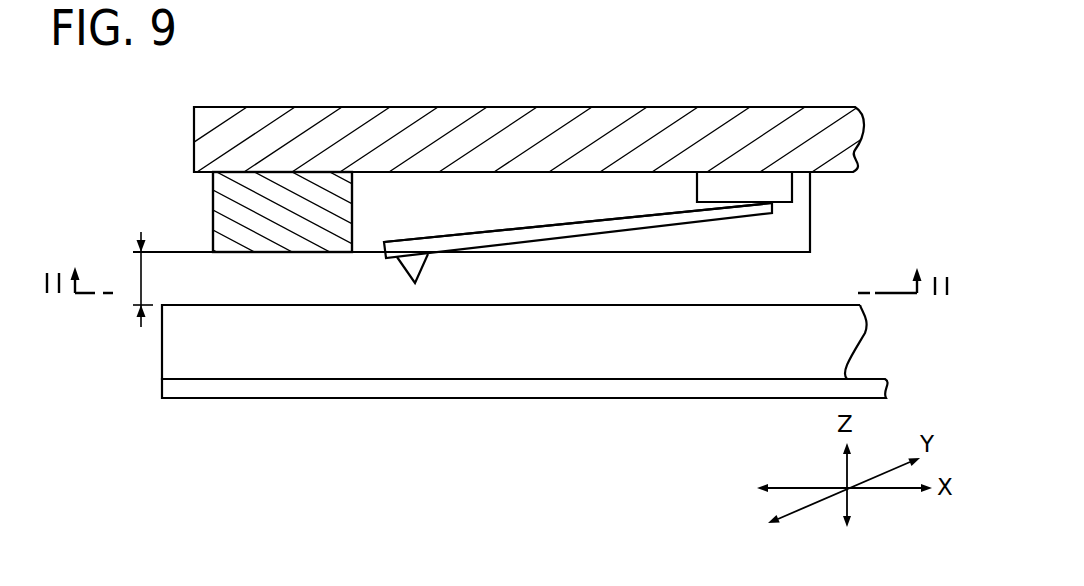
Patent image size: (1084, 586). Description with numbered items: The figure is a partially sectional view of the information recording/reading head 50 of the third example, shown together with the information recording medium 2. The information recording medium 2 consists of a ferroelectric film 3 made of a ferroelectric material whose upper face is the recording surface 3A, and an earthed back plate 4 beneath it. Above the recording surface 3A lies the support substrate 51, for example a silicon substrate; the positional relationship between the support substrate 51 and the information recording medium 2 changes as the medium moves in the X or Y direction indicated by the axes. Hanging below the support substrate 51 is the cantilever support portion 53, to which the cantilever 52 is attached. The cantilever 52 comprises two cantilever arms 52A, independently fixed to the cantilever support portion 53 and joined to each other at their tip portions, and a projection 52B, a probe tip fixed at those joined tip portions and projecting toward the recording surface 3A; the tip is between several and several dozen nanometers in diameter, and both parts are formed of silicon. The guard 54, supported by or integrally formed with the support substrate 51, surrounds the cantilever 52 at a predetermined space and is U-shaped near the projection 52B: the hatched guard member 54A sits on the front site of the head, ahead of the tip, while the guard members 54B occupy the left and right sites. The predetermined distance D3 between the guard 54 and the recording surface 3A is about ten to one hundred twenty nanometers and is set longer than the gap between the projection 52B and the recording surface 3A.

The information recording/reading head 50 is at (849, 78).
The support substrate 51 is at (460, 120).
The cantilever 52 is at (568, 255).
The cantilever arm 52A is at (647, 222).
The projection (probe tip) 52B is at (405, 267).
The cantilever support portion 53 is at (775, 188).
The guard 54 is at (203, 190).
The guard member 54A is at (222, 223).
The guard member 54B is at (563, 200).
The predetermined distance D3 is at (152, 279).
The information recording medium 2 is at (442, 416).
The ferroelectric film 3 is at (170, 347).
The recording surface 3A is at (765, 302).
The back plate 4 is at (203, 388).